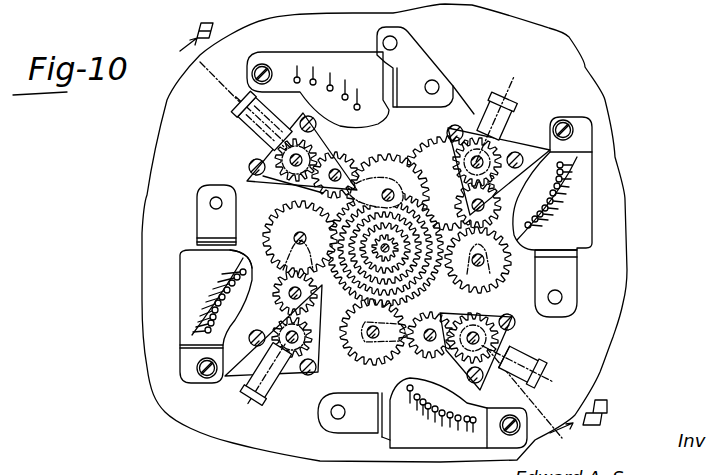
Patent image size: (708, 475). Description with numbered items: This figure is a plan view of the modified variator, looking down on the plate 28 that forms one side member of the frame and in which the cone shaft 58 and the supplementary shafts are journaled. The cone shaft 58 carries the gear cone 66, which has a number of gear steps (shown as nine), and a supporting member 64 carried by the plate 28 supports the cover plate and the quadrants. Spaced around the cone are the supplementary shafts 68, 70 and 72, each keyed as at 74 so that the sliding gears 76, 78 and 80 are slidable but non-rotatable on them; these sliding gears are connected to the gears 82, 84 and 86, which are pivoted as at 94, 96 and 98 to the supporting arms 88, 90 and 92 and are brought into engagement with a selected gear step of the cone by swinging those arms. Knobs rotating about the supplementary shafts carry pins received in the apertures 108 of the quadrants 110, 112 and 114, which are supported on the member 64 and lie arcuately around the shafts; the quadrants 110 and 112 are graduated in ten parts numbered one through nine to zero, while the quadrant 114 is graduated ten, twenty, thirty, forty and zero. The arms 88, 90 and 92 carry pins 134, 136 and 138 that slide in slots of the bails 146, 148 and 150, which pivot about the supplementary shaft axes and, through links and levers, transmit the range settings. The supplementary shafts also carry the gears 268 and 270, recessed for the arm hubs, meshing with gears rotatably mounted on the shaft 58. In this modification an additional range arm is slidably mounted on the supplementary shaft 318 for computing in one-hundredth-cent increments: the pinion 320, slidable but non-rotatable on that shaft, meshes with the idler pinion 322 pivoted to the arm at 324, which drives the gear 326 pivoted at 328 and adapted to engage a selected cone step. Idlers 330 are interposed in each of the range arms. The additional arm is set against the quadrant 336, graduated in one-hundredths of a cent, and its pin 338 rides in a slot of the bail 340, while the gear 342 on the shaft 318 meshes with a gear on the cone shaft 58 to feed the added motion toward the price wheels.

The plate 28 is at (585, 65).
The cone shaft 58 is at (388, 242).
The supporting member 64 is at (411, 45).
The gear cone 66 is at (428, 155).
The supplementary shaft 68 is at (516, 320).
The supplementary shaft 70 is at (510, 130).
The supplementary shaft 72 is at (249, 166).
The key 74 is at (275, 153).
The sliding gear 76 is at (508, 340).
The sliding gear 78 is at (505, 153).
The sliding gear 80 is at (285, 173).
The gear 82 is at (366, 394).
The gear 84 is at (512, 267).
The gear 86 is at (390, 162).
The supporting arm 88 is at (497, 308).
The supporting arm 90 is at (499, 181).
The supporting arm 92 is at (318, 154).
The pivot 94 is at (373, 327).
The pivot 96 is at (478, 255).
The pivot 98 is at (389, 192).
The apertures 108 is at (324, 77).
The quadrant 110 is at (433, 443).
The quadrant 112 is at (590, 182).
The quadrant 114 is at (286, 52).
The pin 134 is at (538, 380).
The pin 136 is at (510, 96).
The pin 138 is at (243, 103).
The bail 146 is at (545, 364).
The bail 148 is at (498, 96).
The bail 150 is at (236, 117).
The gear 268 is at (540, 353).
The gear 270 is at (470, 114).
The supplementary shaft 318 is at (256, 342).
The pinion 320 is at (250, 376).
The idler pinion 322 is at (278, 292).
The pivot 324 is at (248, 260).
The gear 326 is at (233, 227).
The pivot 328 is at (300, 233).
The idlers 330 is at (340, 162).
The quadrant 336 is at (182, 287).
The pin 338 is at (253, 398).
The bail 340 is at (258, 398).
The gear 342 is at (302, 376).